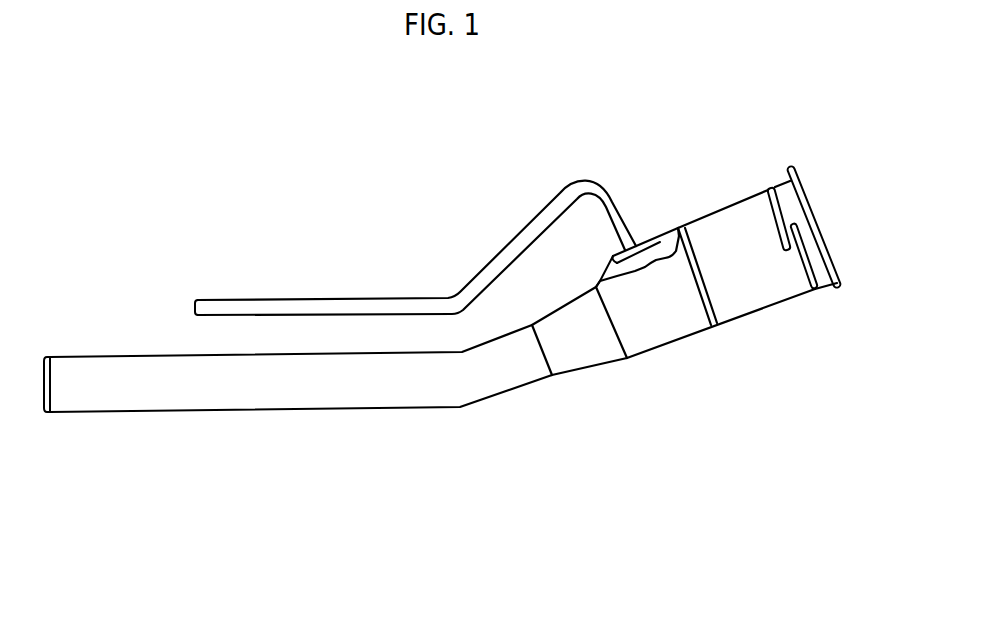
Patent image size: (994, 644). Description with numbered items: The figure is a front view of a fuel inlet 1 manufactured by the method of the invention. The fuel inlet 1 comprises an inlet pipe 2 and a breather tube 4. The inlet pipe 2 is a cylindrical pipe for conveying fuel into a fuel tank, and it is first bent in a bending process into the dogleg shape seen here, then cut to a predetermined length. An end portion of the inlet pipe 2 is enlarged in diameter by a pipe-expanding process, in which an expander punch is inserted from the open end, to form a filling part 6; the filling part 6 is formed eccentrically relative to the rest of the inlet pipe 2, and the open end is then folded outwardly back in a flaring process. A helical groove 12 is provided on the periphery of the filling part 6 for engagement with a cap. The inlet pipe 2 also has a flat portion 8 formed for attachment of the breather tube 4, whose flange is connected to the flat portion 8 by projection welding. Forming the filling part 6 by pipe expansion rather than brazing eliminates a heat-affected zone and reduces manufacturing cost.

The fuel inlet 1 is at (368, 277).
The inlet pipe 2 is at (250, 375).
The breather tube 4 is at (270, 307).
The filling part 6 is at (723, 292).
The flat portion 8 is at (650, 226).
The helical groove 12 is at (818, 222).